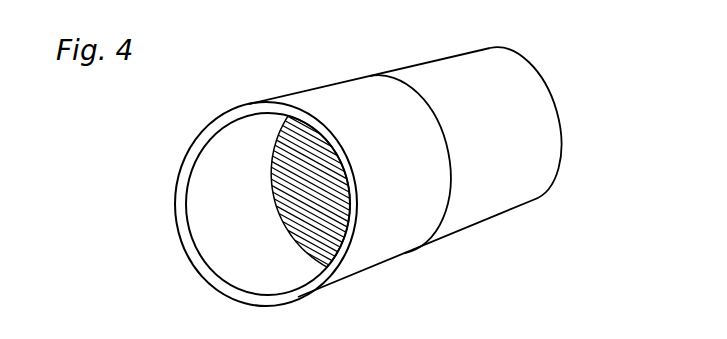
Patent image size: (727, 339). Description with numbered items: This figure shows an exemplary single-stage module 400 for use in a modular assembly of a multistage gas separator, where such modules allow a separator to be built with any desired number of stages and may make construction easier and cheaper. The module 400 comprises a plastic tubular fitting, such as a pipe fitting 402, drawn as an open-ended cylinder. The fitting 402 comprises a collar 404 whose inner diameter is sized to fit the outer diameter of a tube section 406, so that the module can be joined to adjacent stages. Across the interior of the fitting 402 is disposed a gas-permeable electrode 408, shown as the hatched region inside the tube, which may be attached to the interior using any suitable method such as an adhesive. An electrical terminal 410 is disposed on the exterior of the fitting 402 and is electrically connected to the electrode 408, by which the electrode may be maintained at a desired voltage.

The single-stage module 400 is at (285, 83).
The pipe fitting 402 is at (519, 56).
The collar 404 is at (327, 85).
The tube section 406 is at (438, 60).
The gas-permeable electrode 408 is at (325, 247).
The electrical terminal 410 is at (366, 73).